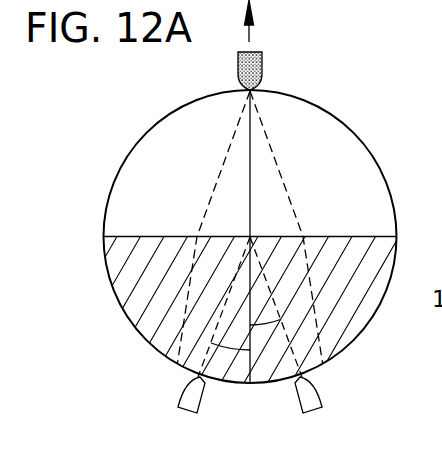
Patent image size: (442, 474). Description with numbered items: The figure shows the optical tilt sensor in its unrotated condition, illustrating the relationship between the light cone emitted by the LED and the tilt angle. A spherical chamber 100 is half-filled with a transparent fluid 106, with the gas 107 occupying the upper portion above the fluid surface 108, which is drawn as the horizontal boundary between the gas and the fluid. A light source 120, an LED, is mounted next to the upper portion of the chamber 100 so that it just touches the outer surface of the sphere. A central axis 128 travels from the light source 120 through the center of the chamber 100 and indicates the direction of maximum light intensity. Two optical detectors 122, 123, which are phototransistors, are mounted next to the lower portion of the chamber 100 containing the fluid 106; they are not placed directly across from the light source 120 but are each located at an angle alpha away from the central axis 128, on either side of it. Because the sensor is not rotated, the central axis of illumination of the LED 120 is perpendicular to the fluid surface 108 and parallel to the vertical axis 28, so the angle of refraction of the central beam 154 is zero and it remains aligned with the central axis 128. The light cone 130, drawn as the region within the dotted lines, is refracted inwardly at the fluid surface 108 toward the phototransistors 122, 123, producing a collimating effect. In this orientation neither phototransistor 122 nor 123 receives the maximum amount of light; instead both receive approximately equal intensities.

The vertical axis 28 is at (249, 33).
The light source 120 is at (258, 70).
The gas 107 is at (366, 158).
The central axis 128 is at (254, 163).
The light cone 130 is at (220, 173).
The liquid interface surface 108 is at (365, 236).
The fluid 106 is at (107, 246).
The chamber 100 is at (148, 342).
The optical detector 122 is at (180, 399).
The optical detector 123 is at (318, 394).
The central beam 154 is at (262, 385).